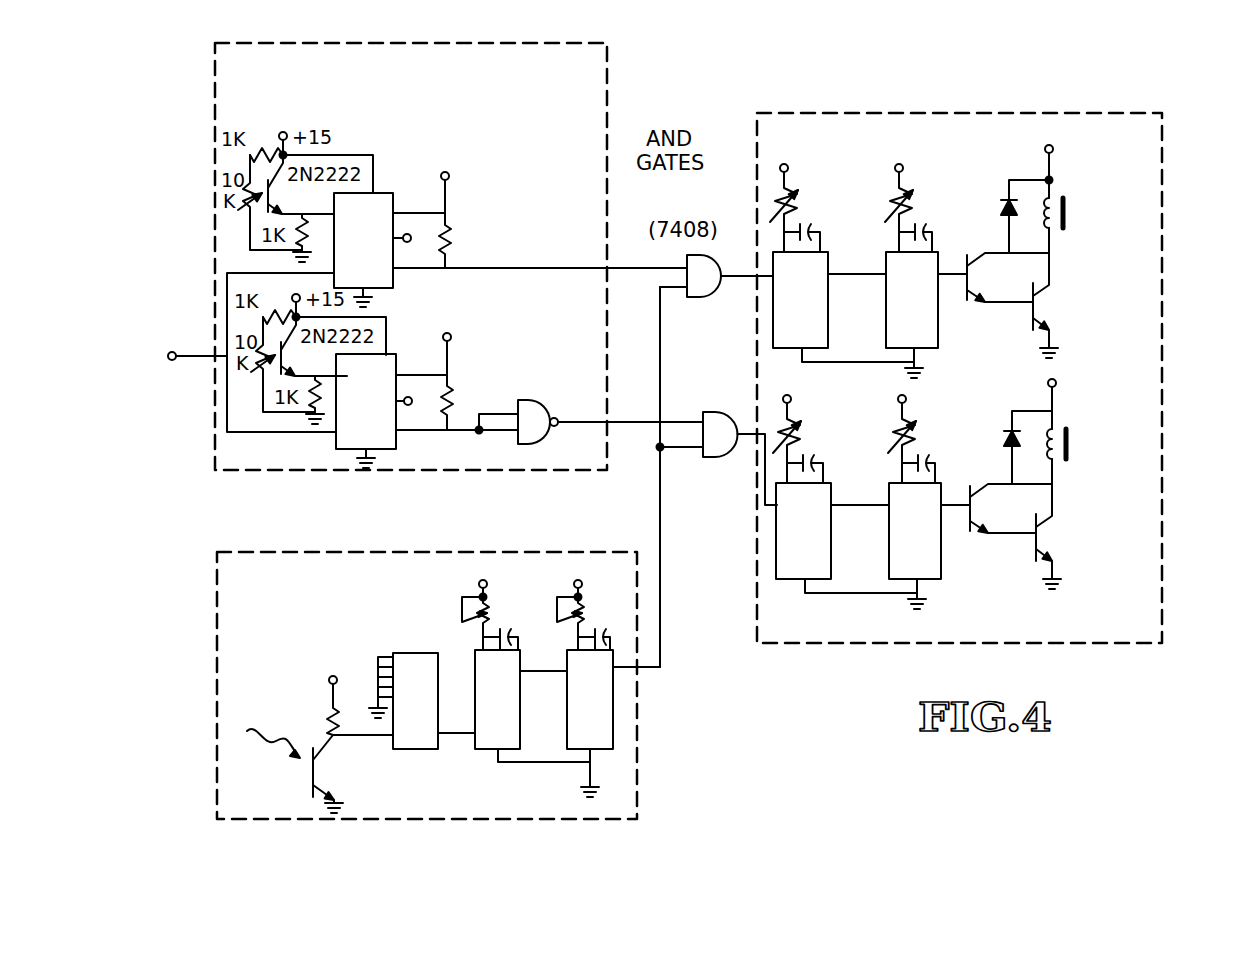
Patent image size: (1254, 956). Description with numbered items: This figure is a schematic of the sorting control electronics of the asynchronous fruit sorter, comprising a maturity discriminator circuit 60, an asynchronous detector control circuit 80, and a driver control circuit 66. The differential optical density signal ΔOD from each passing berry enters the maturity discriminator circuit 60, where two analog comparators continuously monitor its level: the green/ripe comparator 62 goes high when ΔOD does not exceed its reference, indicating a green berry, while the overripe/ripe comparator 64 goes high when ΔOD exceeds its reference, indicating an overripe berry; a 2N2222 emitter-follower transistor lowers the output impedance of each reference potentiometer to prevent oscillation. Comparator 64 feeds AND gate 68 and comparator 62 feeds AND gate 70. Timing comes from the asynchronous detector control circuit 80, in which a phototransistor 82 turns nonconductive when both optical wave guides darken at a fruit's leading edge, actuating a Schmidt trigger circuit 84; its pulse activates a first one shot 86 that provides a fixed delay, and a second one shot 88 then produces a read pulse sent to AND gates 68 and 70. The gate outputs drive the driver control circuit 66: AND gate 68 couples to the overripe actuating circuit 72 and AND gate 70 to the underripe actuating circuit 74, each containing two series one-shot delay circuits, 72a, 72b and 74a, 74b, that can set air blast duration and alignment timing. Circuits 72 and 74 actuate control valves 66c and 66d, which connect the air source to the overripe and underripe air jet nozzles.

The maturity discriminator circuit 60 is at (621, 89).
The green/ripe comparator 62 is at (336, 432).
The overripe/ripe comparator 64 is at (334, 273).
The driver control circuit 66 is at (966, 98).
The control valve 66c is at (1066, 200).
The control valve 66d is at (1143, 415).
The AND gate 68 is at (710, 297).
The AND gate 70 is at (716, 457).
The overripe actuating circuit 72 is at (981, 219).
The one-shot delay circuit 72a is at (833, 262).
The one-shot delay circuit 72b is at (893, 262).
The underripe actuating circuit 74 is at (974, 536).
The one-shot delay circuit 74a is at (805, 538).
The one-shot delay circuit 74b is at (926, 531).
The asynchronous detector control circuit 80 is at (225, 823).
The phototransistor 82 is at (313, 763).
The Schmidt trigger circuit 84 is at (415, 749).
The first one shot 86 is at (500, 749).
The second one shot 88 is at (613, 693).